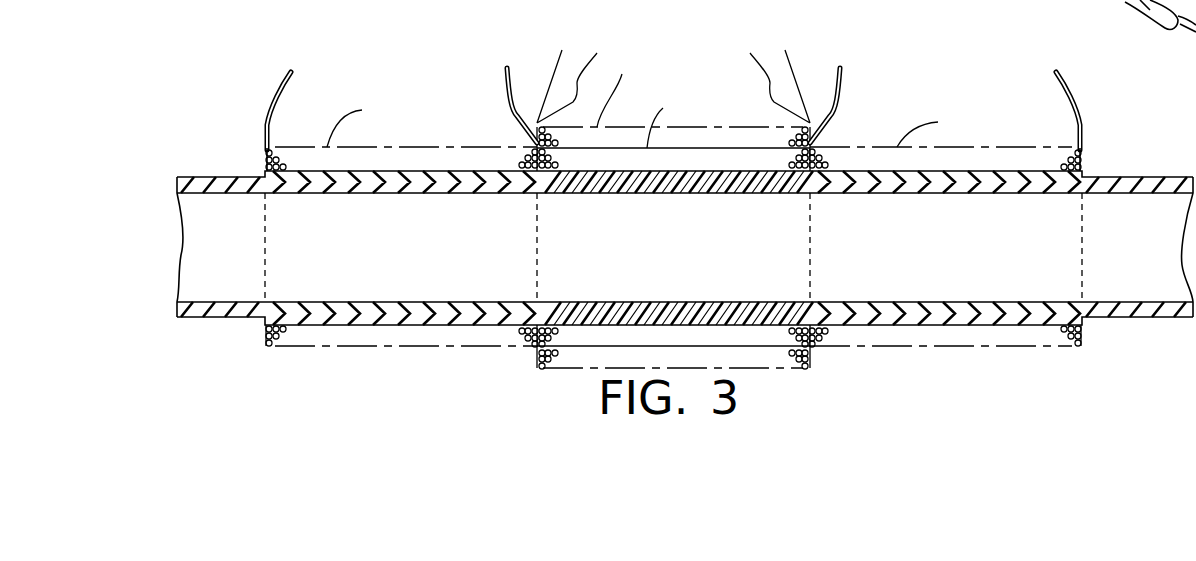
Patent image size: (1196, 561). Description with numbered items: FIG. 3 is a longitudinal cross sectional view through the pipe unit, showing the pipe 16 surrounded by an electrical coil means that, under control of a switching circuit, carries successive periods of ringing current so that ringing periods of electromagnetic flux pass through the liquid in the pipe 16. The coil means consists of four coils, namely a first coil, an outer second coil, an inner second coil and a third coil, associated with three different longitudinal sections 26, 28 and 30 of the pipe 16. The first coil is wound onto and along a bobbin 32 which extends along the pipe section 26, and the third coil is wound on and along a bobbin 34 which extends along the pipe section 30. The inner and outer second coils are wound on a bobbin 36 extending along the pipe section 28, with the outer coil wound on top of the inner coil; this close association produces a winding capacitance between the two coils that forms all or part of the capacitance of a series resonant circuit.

The pipe 16 is at (1110, 177).
The pipe section 26 is at (1082, 247).
The pipe section 28 is at (810, 247).
The pipe section 30 is at (537, 247).
The bobbin 32 is at (1012, 174).
The bobbin 34 is at (448, 174).
The bobbin 36 is at (720, 174).